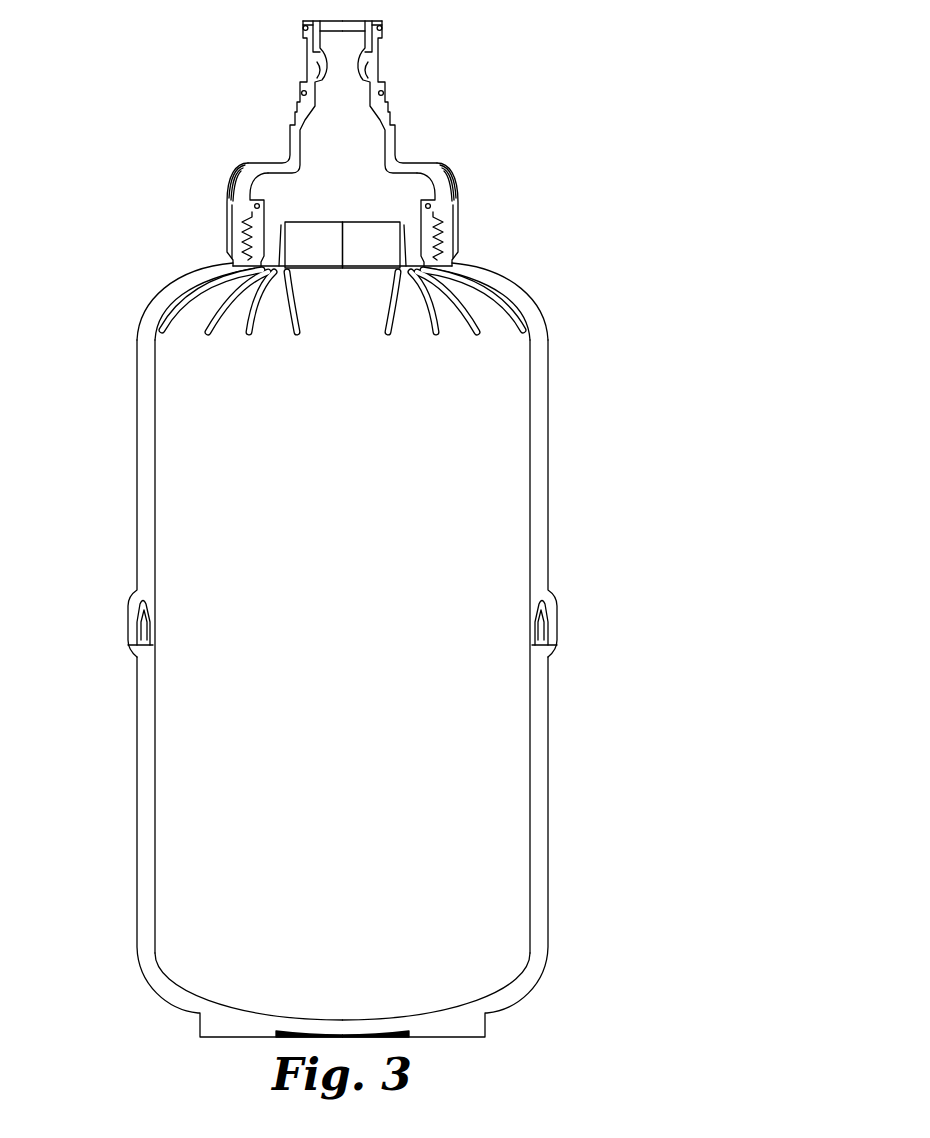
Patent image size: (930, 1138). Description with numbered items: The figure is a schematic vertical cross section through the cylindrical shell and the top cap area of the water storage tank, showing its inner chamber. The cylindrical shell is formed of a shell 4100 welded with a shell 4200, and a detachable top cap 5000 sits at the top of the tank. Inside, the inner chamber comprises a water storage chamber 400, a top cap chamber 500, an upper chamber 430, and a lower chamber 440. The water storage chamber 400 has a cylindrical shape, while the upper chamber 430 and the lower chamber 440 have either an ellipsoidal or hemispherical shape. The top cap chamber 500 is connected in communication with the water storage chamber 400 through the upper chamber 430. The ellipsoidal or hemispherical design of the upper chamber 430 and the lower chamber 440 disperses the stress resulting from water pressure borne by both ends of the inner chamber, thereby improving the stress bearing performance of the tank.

The water storage chamber 400 is at (488, 583).
The shell 4100 is at (137, 502).
The shell 4200 is at (135, 807).
The upper chamber 430 is at (407, 312).
The lower chamber 440 is at (467, 980).
The top cap chamber 500 is at (353, 158).
The detachable top cap 5000 is at (225, 230).